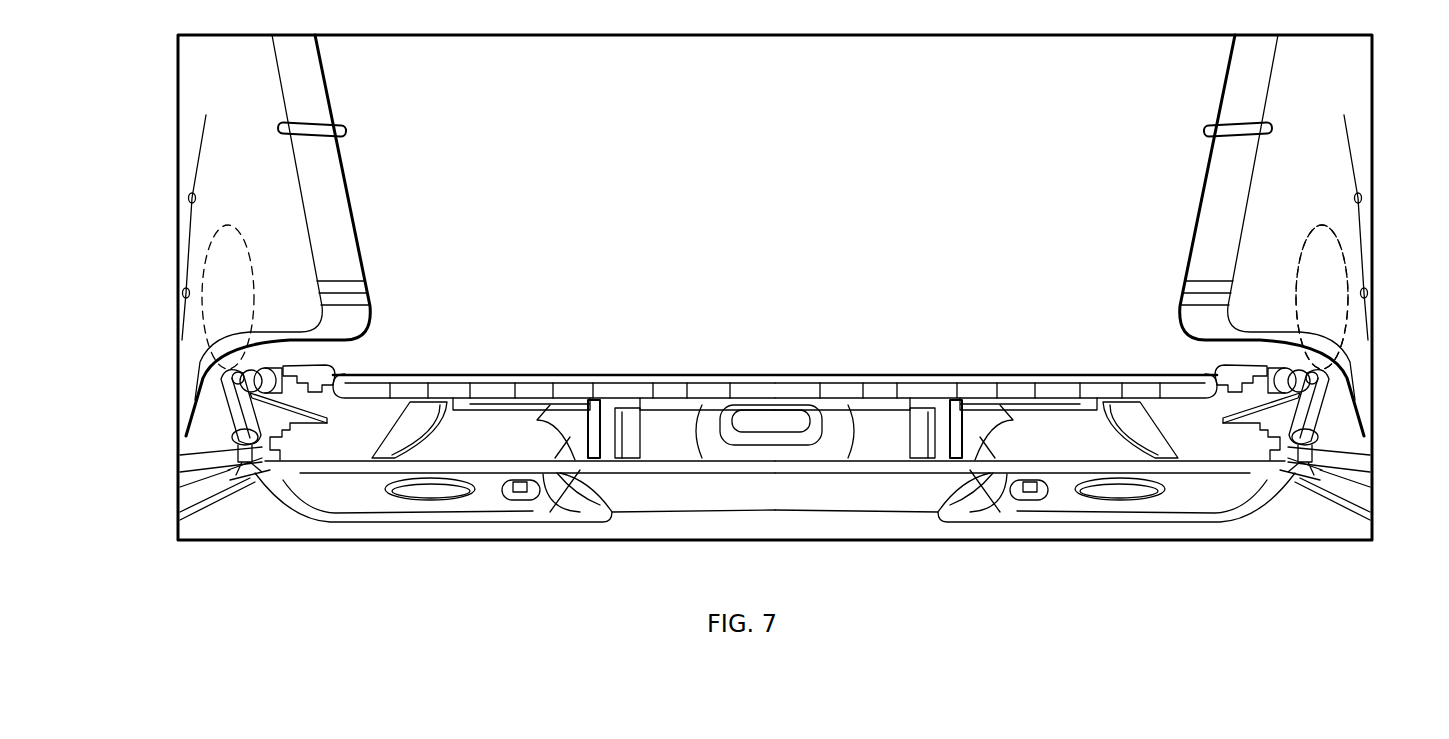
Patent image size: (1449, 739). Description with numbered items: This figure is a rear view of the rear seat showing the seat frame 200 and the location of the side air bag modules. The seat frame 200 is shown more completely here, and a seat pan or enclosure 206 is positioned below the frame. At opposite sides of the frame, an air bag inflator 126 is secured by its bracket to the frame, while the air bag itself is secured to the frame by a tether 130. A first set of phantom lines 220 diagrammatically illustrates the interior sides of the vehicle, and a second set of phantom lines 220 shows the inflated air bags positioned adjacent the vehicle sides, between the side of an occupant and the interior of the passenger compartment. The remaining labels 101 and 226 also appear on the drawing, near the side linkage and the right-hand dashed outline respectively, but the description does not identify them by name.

The link arm 101 is at (232, 412).
The air bag inflator 126 is at (330, 366).
The tether 130 is at (233, 437).
The seat frame 200 is at (619, 371).
The seat pan or enclosure 206 is at (687, 495).
The phantom lines 220 is at (200, 155).
The recess 226 is at (1328, 228).